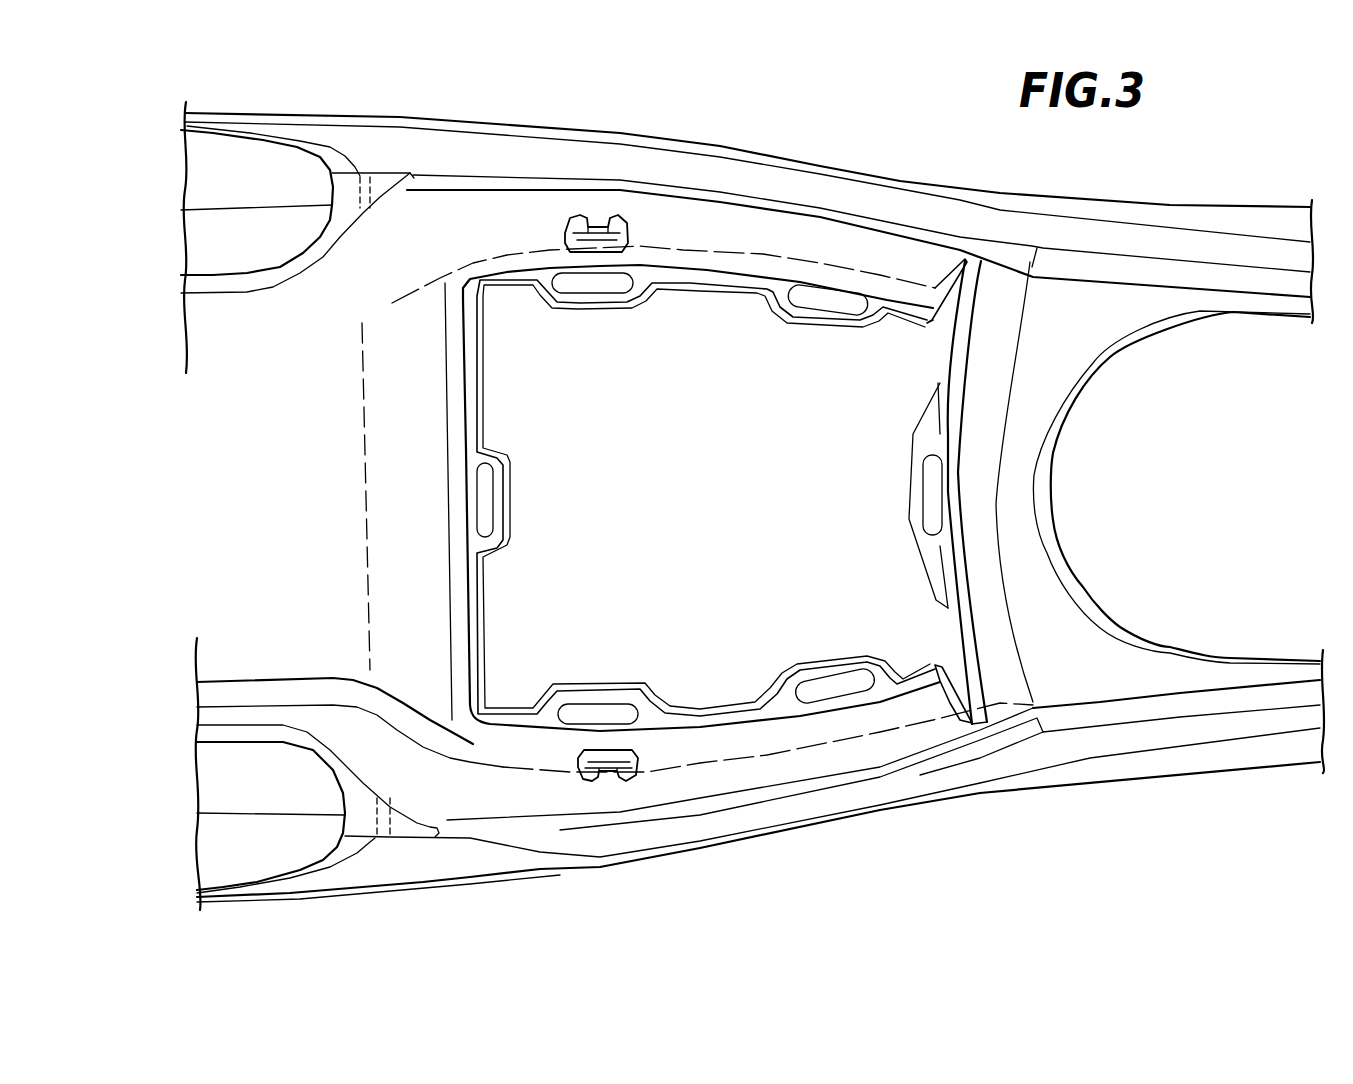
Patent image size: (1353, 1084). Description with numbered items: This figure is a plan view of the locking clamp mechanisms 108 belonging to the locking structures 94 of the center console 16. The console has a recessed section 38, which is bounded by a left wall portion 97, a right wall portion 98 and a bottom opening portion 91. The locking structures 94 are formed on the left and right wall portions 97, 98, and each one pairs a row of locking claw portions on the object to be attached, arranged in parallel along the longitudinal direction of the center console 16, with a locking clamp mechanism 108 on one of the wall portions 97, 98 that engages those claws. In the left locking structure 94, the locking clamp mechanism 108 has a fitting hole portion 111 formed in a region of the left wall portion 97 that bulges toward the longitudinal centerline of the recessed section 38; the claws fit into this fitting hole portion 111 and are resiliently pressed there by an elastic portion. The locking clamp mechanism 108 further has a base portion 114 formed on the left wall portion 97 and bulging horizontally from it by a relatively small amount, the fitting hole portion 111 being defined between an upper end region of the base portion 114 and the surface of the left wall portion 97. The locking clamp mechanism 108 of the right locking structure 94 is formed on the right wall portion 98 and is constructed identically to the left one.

The center console 16 is at (135, 258).
The recessed section 38 is at (733, 210).
The bottom opening portion 91 is at (900, 313).
The locking structure 94 is at (585, 206).
The left wall portion 97 is at (682, 777).
The right wall portion 98 is at (792, 230).
The locking clamp mechanism 108 is at (600, 256).
The fitting hole portion 111 is at (600, 207).
The base portion 114 is at (645, 283).